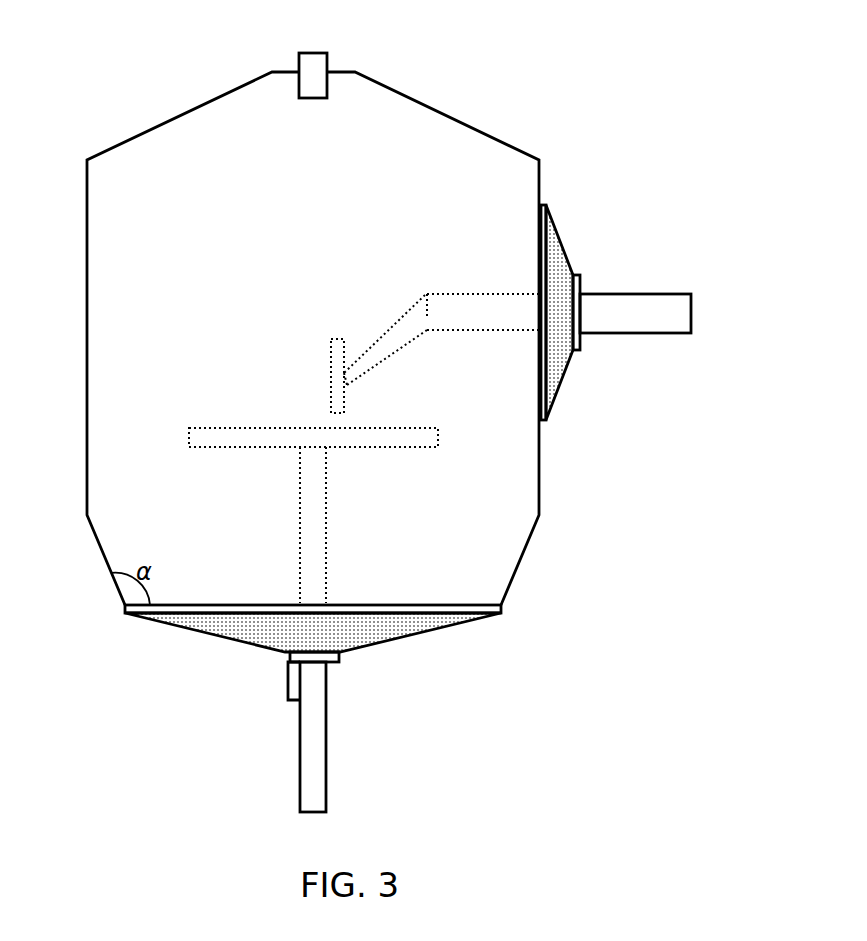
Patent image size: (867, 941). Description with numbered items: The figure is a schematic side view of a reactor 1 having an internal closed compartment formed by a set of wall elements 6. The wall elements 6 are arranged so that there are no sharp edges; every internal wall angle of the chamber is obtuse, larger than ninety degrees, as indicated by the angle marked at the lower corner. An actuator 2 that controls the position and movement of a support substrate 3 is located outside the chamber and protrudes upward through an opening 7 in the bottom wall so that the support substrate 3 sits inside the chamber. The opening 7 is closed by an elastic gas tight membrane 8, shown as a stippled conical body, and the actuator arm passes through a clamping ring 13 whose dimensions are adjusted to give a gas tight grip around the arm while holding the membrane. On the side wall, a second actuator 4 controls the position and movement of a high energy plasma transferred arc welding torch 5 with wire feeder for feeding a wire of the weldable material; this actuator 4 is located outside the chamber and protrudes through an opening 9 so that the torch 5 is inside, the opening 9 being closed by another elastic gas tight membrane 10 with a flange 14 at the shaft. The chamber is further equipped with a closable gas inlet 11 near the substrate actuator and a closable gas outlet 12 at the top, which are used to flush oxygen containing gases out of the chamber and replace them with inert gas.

The reactor 1 is at (473, 62).
The actuator 2 is at (328, 532).
The support substrate 3 is at (248, 428).
The actuator 4 is at (487, 294).
The high energy plasma transferred arc welding torch 5 is at (338, 339).
The wall elements 6 is at (187, 115).
The opening 7 is at (505, 612).
The elastic gas tight membrane 8 is at (405, 642).
The opening 9 is at (548, 412).
The elastic gas tight membrane 10 is at (560, 258).
The closable gas inlet 11 is at (288, 675).
The closable gas outlet 12 is at (298, 61).
The clamping ring 13 is at (340, 662).
The flange 14 is at (580, 285).